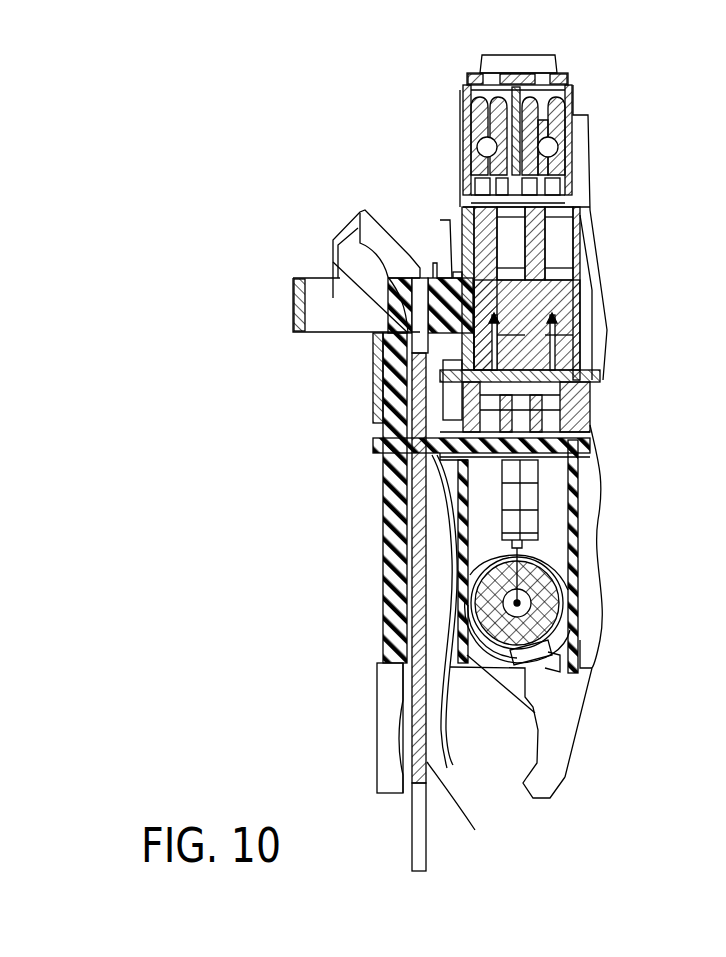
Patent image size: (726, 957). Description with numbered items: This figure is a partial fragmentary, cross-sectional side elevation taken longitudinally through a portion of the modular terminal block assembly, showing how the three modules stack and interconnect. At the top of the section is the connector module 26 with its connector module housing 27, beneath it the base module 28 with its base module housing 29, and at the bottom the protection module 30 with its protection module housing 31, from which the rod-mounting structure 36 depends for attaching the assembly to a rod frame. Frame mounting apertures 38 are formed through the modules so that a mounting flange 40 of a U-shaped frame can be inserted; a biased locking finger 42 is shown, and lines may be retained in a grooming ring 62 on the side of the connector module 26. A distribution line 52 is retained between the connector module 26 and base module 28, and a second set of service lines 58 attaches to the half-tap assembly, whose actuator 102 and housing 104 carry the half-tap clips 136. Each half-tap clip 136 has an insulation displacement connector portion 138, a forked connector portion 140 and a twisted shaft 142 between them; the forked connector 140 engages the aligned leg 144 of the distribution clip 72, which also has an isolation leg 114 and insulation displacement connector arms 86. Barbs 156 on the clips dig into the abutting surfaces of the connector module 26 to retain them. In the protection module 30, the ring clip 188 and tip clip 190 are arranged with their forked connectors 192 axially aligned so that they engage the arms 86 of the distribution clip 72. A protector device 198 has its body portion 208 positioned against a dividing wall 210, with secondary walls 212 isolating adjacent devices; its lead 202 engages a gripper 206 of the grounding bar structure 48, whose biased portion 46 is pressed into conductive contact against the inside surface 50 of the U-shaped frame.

The connector module 26 is at (247, 258).
The connector module housing 27 is at (418, 298).
The base module 28 is at (290, 375).
The base module housing 29 is at (380, 435).
The protection module 30 is at (320, 511).
The protection module housing 31 is at (380, 577).
The rod-mounting structure 36 is at (475, 770).
The frame mounting aperture 38 is at (378, 340).
The mounting flange 40 is at (380, 543).
The biased locking finger 42 is at (360, 213).
The biased portion 46 is at (446, 732).
The grounding bar structure 48 is at (405, 612).
The inside surface 50 is at (427, 762).
The distribution line 52 is at (563, 313).
The second set of service lines 58 is at (464, 120).
The grooming ring 62 is at (345, 293).
The distribution clip 72 is at (470, 250).
The insulation displacement connector portion 86 is at (540, 353).
The actuator 102 is at (480, 64).
The housing 104 is at (466, 80).
The isolation leg 114 is at (510, 237).
The half-tap clip 136 is at (448, 155).
The insulation displacement connector portion 138 is at (463, 117).
The forked connector portion 140 is at (465, 187).
The shaft 142 is at (465, 164).
The aligned leg 144 is at (460, 205).
The barb 156 is at (378, 368).
The ring clip 188 is at (458, 460).
The tip clip 190 is at (575, 476).
The forked connector 192 is at (385, 407).
The protector device 198 is at (548, 670).
The lead 202 is at (533, 545).
The gripper 206 is at (533, 493).
The body portion 208 is at (545, 628).
The wall 210 is at (570, 592).
The secondary wall 212 is at (583, 663).